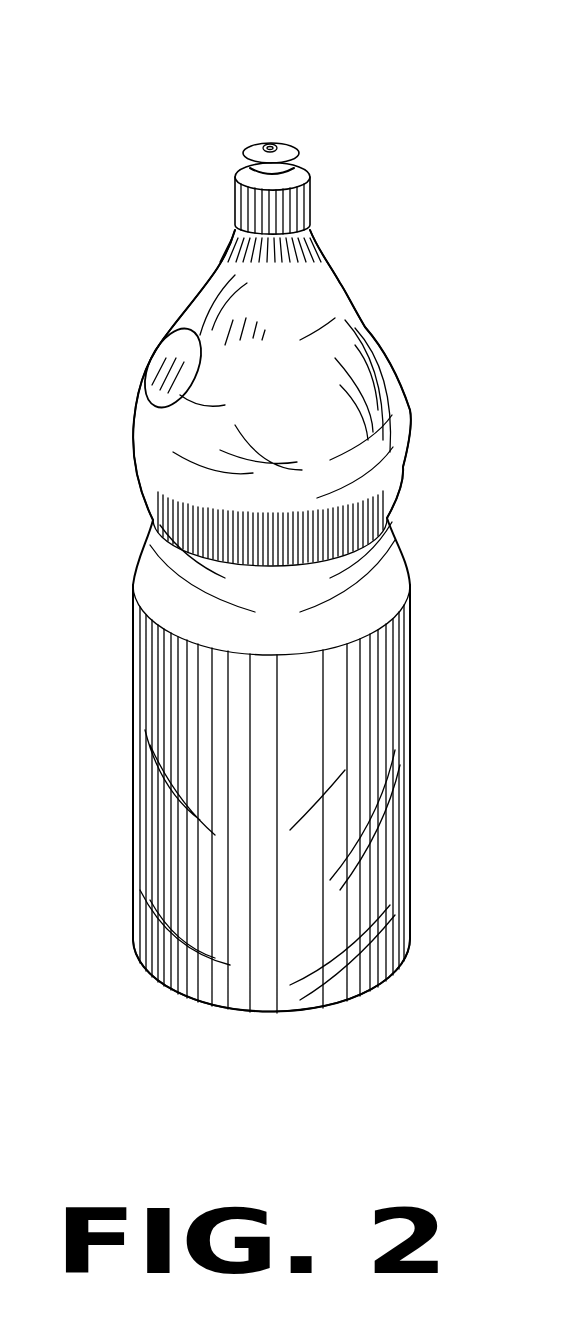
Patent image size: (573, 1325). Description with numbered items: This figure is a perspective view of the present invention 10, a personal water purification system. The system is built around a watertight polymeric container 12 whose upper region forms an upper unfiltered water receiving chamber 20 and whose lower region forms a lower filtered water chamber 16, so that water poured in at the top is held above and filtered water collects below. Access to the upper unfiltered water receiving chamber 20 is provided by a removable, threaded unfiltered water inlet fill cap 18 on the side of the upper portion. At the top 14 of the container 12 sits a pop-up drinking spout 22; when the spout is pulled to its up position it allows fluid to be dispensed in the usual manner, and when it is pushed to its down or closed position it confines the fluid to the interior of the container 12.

The present invention 10 is at (382, 184).
The watertight polymeric container 12 is at (135, 712).
The top 14 is at (238, 172).
The lower filtered water chamber 16 is at (412, 752).
The unfiltered water inlet fill cap 18 is at (175, 347).
The upper unfiltered water receiving chamber 20 is at (367, 327).
The pop-up drinking spout 22 is at (284, 147).